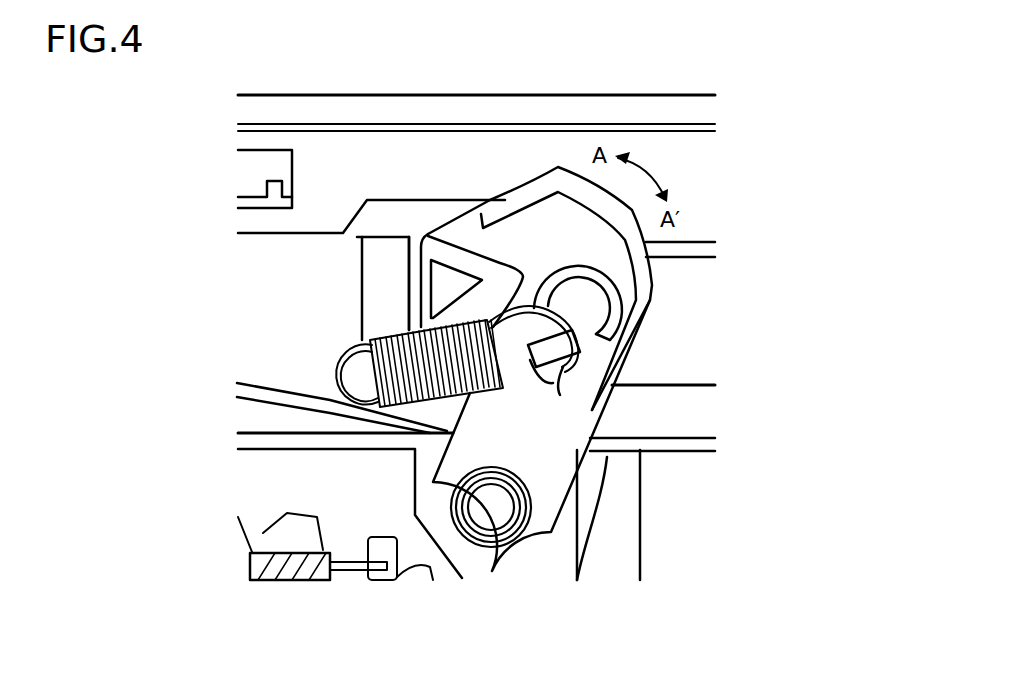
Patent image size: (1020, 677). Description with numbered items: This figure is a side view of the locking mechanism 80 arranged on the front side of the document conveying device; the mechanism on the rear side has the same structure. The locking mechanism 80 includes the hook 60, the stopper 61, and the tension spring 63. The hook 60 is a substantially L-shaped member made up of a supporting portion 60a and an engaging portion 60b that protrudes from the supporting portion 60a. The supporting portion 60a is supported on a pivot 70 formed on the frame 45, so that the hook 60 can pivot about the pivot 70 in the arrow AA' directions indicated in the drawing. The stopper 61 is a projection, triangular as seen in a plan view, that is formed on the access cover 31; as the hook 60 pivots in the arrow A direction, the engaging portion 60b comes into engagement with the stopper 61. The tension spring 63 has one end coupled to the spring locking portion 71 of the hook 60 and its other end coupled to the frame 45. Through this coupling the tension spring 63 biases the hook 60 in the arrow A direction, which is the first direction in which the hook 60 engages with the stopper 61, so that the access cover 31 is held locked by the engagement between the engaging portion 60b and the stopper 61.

The access cover 31 is at (238, 115).
The frame 45 is at (254, 447).
The hook 60 is at (574, 358).
The supporting portion 60a is at (590, 405).
The engaging portion 60b is at (452, 237).
The stopper 61 is at (407, 273).
The tension spring 63 is at (387, 338).
The pivot 70 is at (492, 513).
The spring locking portion 71 is at (572, 380).
The locking mechanism 80 is at (663, 353).